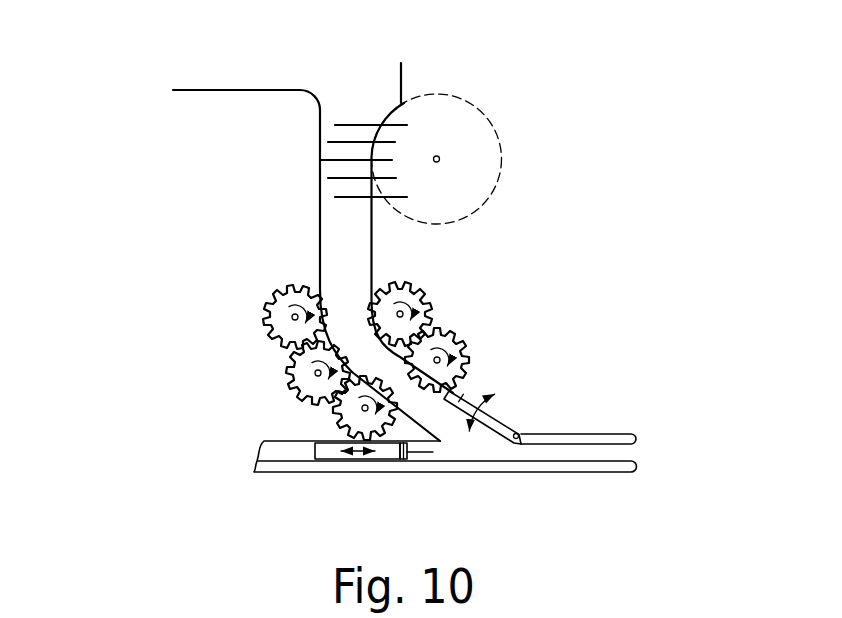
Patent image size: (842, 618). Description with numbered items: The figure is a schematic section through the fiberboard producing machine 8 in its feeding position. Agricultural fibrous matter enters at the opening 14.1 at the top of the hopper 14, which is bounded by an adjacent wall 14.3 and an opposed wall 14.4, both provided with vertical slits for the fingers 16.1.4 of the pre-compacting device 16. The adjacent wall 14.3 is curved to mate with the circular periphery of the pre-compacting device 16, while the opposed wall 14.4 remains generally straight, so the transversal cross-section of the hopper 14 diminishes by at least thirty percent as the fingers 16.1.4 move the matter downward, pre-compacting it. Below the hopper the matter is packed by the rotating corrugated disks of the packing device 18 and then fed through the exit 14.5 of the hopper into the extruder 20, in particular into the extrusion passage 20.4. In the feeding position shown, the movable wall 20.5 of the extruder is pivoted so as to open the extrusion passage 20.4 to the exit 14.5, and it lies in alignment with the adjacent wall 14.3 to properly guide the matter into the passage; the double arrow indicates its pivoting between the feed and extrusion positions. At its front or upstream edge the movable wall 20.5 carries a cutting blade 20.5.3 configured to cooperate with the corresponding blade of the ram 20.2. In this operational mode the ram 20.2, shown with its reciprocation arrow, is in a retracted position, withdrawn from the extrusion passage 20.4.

The fiberboard producing machine 8 is at (180, 245).
The hopper 14 is at (292, 193).
The opening of the hopper 14.1 is at (332, 118).
The adjacent wall 14.3 is at (372, 226).
The opposed wall 14.4 is at (319, 154).
The exit of the hopper 14.5 is at (448, 427).
The pre-compacting device 16 is at (511, 100).
The fingers 16.1.4 is at (360, 197).
The packing device 18 is at (443, 317).
The extruder 20 is at (652, 410).
The ram 20.2 is at (330, 450).
The extrusion passage 20.4 is at (575, 453).
The movable wall 20.5 is at (505, 418).
The cutting blade 20.5.3 is at (462, 392).